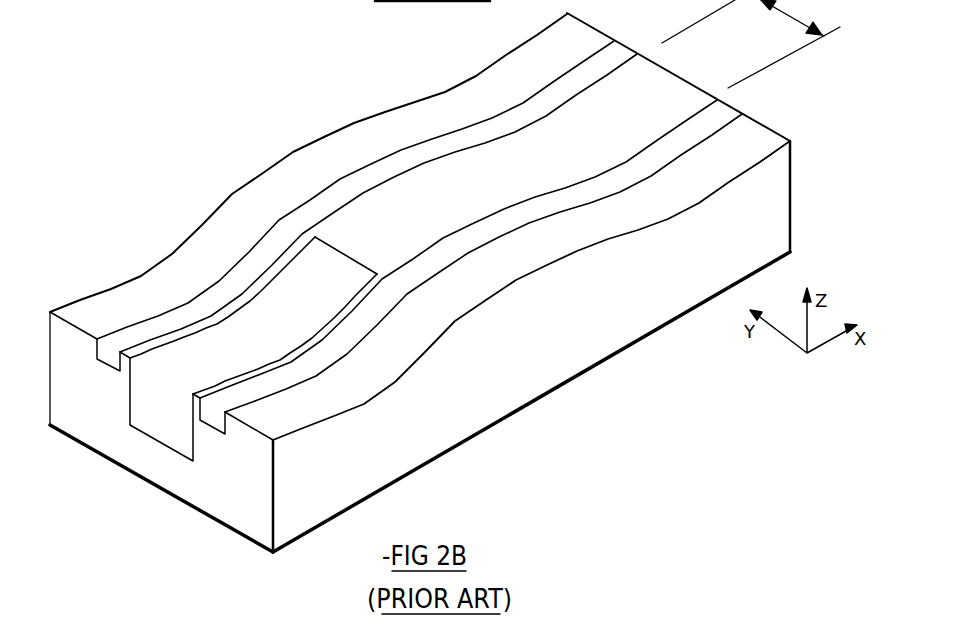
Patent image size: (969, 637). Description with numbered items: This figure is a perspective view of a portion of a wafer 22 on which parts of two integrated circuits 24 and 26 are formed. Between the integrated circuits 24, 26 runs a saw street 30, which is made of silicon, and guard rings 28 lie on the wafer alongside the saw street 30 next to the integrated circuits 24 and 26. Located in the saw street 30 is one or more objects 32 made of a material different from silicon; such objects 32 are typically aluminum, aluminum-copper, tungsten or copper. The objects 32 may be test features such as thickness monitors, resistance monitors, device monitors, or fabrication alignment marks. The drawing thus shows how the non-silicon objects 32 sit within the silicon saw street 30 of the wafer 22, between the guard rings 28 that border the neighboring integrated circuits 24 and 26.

The wafer 22 is at (208, 152).
The integrated circuit 24 is at (297, 158).
The integrated circuit 26 is at (757, 124).
The guard rings 28 is at (598, 62).
The saw street 30 is at (751, 44).
The object 32 is at (175, 358).